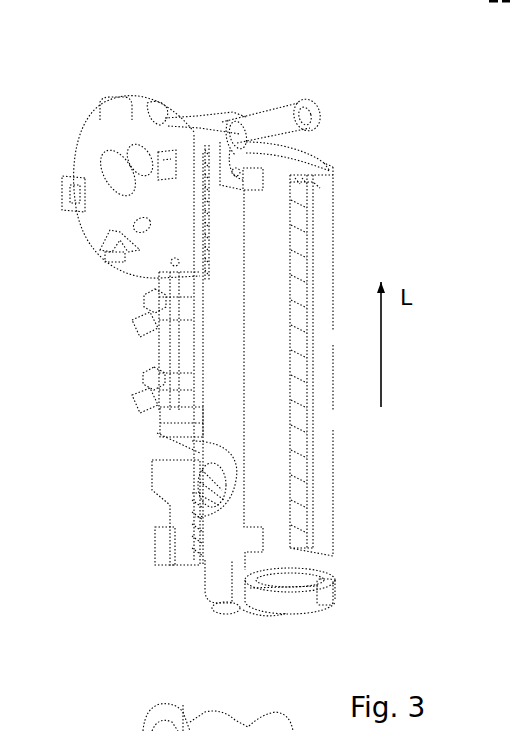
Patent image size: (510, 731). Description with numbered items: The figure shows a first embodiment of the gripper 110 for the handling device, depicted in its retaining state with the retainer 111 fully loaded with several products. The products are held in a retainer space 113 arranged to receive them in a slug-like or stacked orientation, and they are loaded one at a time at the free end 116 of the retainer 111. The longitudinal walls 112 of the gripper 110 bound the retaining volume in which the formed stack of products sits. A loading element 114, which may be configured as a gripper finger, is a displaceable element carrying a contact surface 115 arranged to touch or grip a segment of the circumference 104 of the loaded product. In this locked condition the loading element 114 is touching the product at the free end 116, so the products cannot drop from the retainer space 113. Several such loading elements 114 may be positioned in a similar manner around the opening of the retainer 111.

The gripper 110 is at (95, 69).
The retainer 111 is at (333, 163).
The retainer space 113 is at (296, 237).
The longitudinal walls 112 is at (328, 542).
The loading element 114 is at (165, 491).
The contact surface 115 is at (227, 604).
The circumference 104 is at (300, 617).
The free end 116 is at (356, 588).